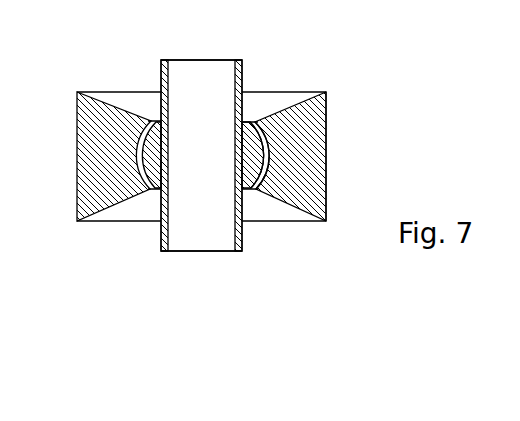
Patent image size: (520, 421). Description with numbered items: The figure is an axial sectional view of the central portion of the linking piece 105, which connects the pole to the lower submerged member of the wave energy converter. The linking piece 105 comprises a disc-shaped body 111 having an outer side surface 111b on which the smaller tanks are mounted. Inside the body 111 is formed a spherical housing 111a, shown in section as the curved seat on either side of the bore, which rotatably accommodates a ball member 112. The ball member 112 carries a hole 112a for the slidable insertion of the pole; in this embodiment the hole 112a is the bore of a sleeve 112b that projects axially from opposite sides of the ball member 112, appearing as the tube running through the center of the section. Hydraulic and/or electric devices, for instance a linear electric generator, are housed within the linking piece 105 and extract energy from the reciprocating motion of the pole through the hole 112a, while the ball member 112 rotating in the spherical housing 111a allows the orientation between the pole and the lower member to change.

The linking piece 105 is at (329, 78).
The disc-shaped body 111 is at (330, 125).
The spherical housing 111a is at (257, 188).
The outer side surface 111b is at (327, 168).
The ball member 112 is at (150, 121).
The hole 112a is at (233, 230).
The sleeve 112b is at (242, 61).